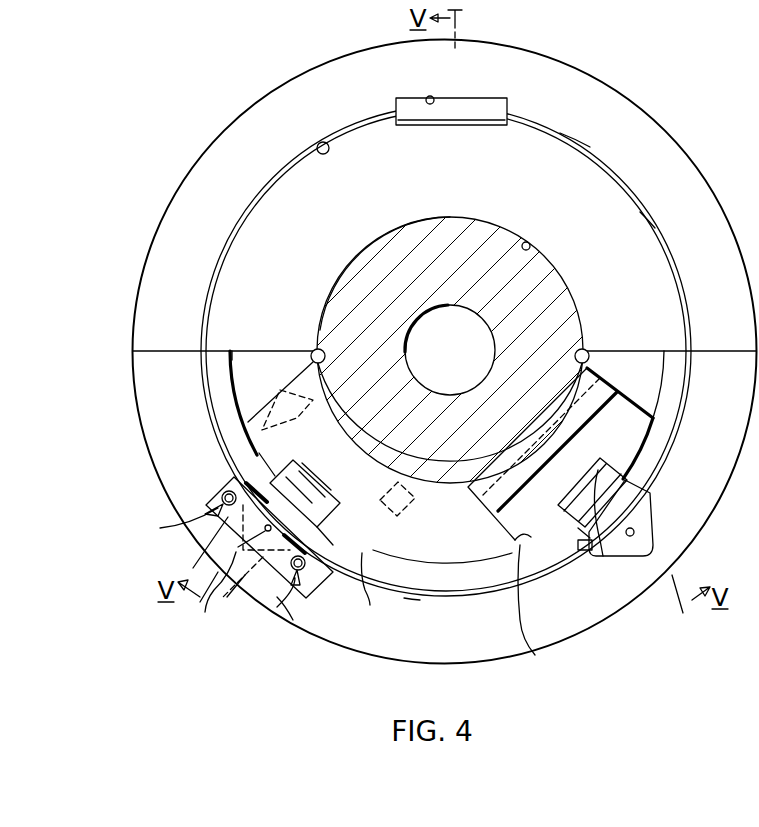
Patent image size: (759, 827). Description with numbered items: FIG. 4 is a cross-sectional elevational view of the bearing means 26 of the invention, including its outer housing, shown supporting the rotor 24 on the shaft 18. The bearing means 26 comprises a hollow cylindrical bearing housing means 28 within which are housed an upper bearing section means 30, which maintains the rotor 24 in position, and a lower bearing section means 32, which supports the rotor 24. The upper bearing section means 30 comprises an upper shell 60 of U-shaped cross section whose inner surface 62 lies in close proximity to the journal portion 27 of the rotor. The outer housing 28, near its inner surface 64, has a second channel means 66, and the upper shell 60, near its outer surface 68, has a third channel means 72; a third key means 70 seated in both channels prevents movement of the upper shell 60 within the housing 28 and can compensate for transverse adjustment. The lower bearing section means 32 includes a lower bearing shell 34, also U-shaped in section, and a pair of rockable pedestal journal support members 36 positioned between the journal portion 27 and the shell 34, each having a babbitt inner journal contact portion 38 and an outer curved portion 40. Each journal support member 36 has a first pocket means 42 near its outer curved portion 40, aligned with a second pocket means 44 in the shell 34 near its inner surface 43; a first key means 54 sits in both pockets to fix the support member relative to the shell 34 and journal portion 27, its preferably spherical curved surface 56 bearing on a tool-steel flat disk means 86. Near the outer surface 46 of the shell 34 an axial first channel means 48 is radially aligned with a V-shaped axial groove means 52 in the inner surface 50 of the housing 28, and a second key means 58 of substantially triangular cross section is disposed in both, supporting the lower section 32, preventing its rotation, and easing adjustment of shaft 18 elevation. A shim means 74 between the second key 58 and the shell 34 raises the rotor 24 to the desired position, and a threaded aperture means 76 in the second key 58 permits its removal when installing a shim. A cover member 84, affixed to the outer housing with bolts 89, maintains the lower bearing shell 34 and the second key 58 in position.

The shaft 18 is at (482, 233).
The rotor 24 is at (619, 304).
The bearing means 26 is at (167, 201).
The journal portion 27 is at (558, 276).
The bearing housing means 28 is at (685, 168).
The upper bearing section means 30 is at (277, 200).
The lower bearing section means 32 is at (625, 406).
The lower bearing shell 34 is at (236, 378).
The rockable pedestal journal support member 36 is at (385, 525).
The inner journal contact portion 38 is at (585, 348).
The outer curved portion 40 is at (457, 611).
The first pocket means 42 is at (598, 468).
The inner surface 43 is at (410, 560).
The second pocket means 44 is at (578, 528).
The outer surface 46 is at (414, 596).
The first channel means 48 is at (240, 484).
The inner surface 50 is at (293, 620).
The V-shaped axial groove means 52 is at (225, 600).
The first key means 54 is at (703, 506).
The curved surface 56 is at (604, 548).
The second key means 58 is at (280, 568).
The upper shell 60 is at (640, 225).
The inner surface 62 is at (532, 247).
The inner surface 64 is at (320, 143).
The second channel means 66 is at (430, 96).
The outer surface 68 is at (573, 140).
The third key means 70 is at (488, 108).
The third channel means 72 is at (478, 125).
The shim means 74 is at (584, 550).
The threaded aperture means 76 is at (205, 612).
The cover member 84 is at (196, 548).
The flat disk means 86 is at (305, 470).
The bolt 89 is at (216, 572).